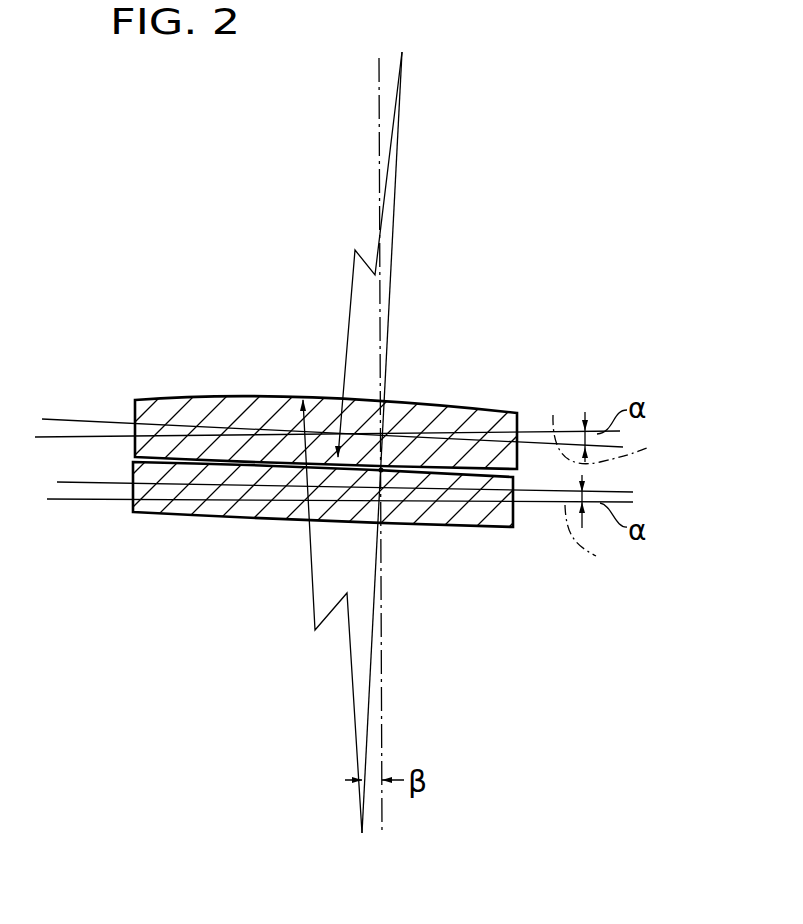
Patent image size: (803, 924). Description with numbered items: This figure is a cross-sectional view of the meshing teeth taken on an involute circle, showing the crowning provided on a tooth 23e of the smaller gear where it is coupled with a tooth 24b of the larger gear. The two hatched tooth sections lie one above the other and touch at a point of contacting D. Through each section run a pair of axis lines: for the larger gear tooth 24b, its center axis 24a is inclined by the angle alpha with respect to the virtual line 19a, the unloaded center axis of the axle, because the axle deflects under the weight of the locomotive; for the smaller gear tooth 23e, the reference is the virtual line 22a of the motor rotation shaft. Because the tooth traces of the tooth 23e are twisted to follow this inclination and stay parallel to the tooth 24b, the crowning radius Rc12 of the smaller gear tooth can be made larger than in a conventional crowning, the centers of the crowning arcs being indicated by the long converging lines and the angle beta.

The tooth of the smaller gear 23e is at (233, 417).
The tooth of the larger gear 24b is at (200, 513).
The virtual line 22a is at (553, 415).
The center axis of the larger gear 24a is at (371, 502).
The virtual line 19a is at (542, 497).
The point of contacting D is at (381, 471).
The radius of the crowning Rc12 is at (266, 594).